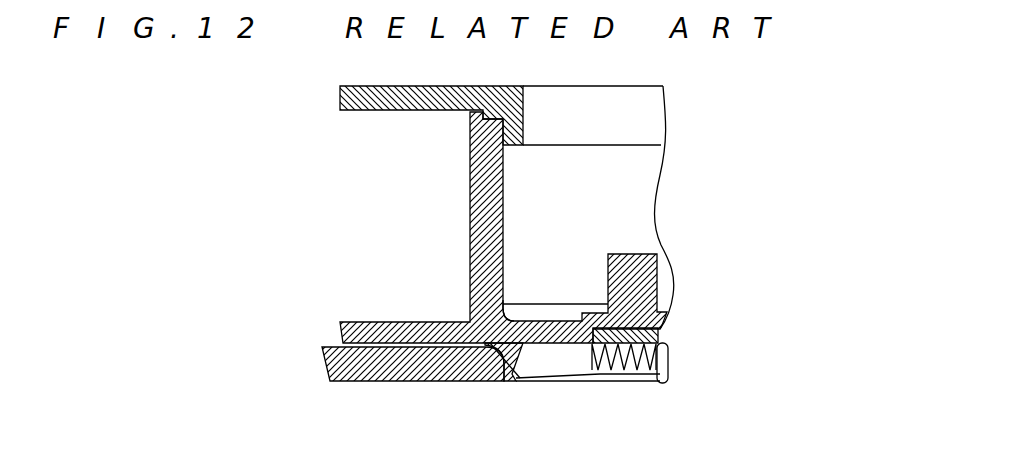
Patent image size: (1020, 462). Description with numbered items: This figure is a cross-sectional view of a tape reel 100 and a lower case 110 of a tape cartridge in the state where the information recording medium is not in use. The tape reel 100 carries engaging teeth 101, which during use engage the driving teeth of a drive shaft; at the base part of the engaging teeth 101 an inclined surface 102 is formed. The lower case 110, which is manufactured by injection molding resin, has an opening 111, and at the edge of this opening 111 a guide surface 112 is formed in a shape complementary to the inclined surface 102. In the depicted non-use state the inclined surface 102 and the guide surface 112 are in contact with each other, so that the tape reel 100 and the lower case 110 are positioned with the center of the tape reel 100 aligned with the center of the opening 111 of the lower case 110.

The tape reel 100 is at (444, 215).
The lower case 110 is at (299, 362).
The guide surface 112 is at (509, 318).
The inclined surface 102 is at (485, 360).
The engaging teeth 101 is at (573, 384).
The opening 111 is at (622, 387).